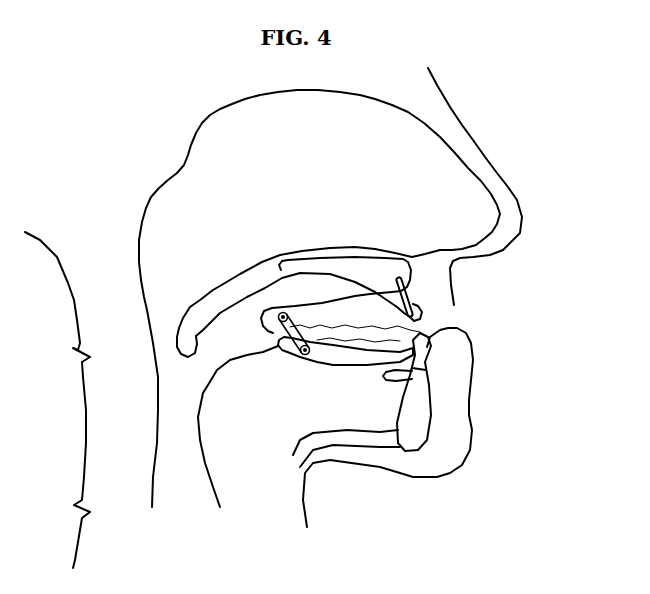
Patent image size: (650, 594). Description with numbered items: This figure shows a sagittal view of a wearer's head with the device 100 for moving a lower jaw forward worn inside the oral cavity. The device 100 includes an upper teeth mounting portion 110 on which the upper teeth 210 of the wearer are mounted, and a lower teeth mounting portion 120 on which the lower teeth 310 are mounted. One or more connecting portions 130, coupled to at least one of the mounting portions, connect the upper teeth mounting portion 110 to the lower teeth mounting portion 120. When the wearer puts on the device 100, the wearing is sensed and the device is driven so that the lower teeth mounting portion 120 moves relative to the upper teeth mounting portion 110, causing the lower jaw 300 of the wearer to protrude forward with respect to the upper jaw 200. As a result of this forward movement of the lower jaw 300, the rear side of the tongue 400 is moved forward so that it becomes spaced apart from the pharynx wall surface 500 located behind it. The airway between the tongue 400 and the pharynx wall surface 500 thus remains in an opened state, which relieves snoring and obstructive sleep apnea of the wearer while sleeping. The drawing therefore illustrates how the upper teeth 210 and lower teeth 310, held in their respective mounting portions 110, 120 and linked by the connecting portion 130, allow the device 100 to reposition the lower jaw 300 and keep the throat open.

The device for moving a lower jaw forward 100 is at (345, 432).
The upper teeth mounting portion 110 is at (300, 269).
The lower teeth mounting portion 120 is at (345, 242).
The connecting portion 130 is at (267, 366).
The upper jaw 200 is at (375, 259).
The upper teeth 210 is at (462, 293).
The lower jaw 300 is at (468, 392).
The lower teeth 310 is at (409, 325).
The tongue 400 is at (238, 457).
The pharynx wall surface 500 is at (90, 400).